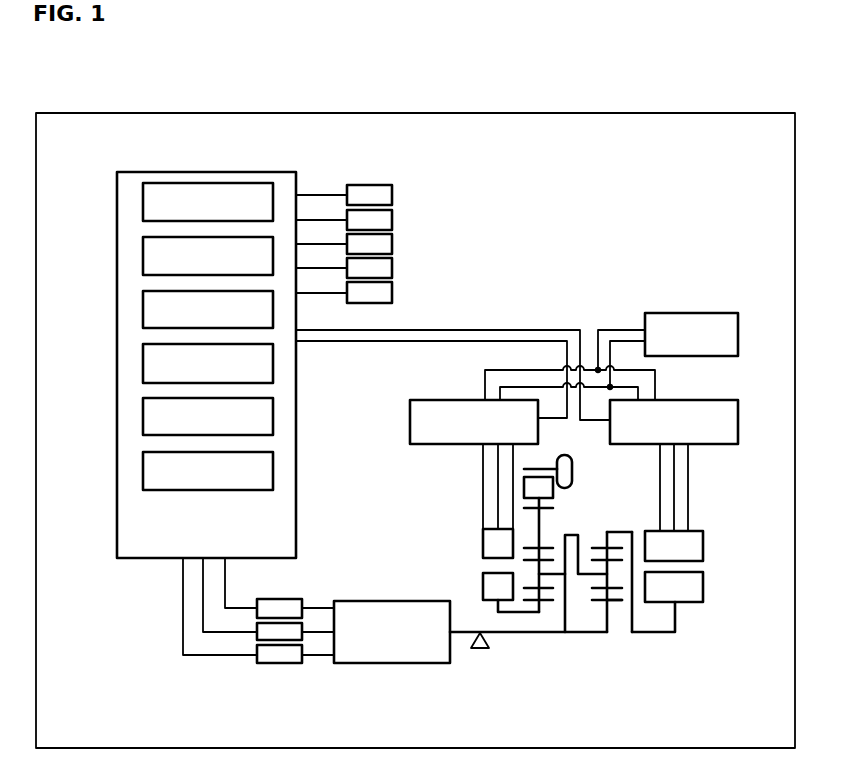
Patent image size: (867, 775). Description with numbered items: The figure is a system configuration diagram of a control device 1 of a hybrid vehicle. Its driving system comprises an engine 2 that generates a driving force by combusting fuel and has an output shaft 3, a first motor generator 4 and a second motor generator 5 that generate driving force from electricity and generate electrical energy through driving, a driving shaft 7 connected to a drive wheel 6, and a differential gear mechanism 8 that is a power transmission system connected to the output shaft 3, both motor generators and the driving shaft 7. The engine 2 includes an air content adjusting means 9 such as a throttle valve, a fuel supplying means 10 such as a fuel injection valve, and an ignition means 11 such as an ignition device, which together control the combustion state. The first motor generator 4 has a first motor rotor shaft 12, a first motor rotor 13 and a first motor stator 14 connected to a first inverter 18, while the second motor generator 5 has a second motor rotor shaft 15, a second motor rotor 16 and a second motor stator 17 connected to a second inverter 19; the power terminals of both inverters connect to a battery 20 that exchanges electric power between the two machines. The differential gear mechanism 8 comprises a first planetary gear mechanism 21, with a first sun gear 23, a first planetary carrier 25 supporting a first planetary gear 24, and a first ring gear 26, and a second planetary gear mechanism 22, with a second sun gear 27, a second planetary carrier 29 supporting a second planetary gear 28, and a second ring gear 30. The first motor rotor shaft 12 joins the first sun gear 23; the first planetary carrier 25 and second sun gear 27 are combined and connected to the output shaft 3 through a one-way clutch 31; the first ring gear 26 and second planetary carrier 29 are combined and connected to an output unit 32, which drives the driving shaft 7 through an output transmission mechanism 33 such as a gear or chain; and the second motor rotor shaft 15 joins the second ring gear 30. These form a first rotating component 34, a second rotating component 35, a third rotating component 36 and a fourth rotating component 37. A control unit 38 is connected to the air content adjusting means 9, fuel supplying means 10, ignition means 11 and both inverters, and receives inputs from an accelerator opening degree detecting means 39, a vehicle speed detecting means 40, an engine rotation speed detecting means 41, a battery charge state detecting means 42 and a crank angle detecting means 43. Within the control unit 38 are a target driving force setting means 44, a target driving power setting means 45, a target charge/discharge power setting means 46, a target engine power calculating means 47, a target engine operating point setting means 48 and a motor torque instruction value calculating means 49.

The control device of a hybrid vehicle 1 is at (658, 111).
The engine 2 is at (398, 663).
The output shaft 3 is at (463, 633).
The first motor generator 4 is at (480, 531).
The second motor generator 5 is at (707, 530).
The drive wheel 6 is at (572, 470).
The driving shaft 7 is at (561, 456).
The differential gear mechanism 8 is at (630, 641).
The air content adjusting means 9 is at (280, 599).
The fuel supplying means 10 is at (259, 634).
The ignition means 11 is at (280, 663).
The first motor rotor shaft 12 is at (515, 633).
The first motor rotor 13 is at (483, 586).
The first motor stator 14 is at (483, 547).
The second motor rotor shaft 15 is at (646, 633).
The second motor rotor 16 is at (703, 591).
The second motor stator 17 is at (703, 549).
The first inverter 18 is at (451, 400).
The second inverter 19 is at (690, 400).
The battery 20 is at (690, 313).
The first planetary gear mechanism 21 is at (538, 618).
The second planetary gear mechanism 22 is at (613, 613).
The first sun gear 23 is at (498, 608).
The first planetary gear 24 is at (532, 572).
The first planetary carrier 25 is at (558, 573).
The first ring gear 26 is at (530, 548).
The second sun gear 27 is at (618, 600).
The second planetary gear 28 is at (615, 598).
The second planetary carrier 29 is at (581, 572).
The second ring gear 30 is at (612, 531).
The one-way clutch 31 is at (480, 651).
The output unit 32 is at (535, 508).
The output transmission mechanism 33 is at (524, 487).
The first rotating component 34 is at (547, 607).
The second rotating component 35 is at (567, 637).
The third rotating component 36 is at (583, 591).
The fourth rotating component 37 is at (620, 531).
The control unit 38 is at (133, 559).
The accelerator opening degree detecting means 39 is at (392, 192).
The vehicle speed detecting means 40 is at (392, 218).
The engine rotation speed detecting means 41 is at (392, 243).
The battery charge state detecting means 42 is at (392, 268).
The crank angle detecting means 43 is at (392, 294).
The target driving force setting means 44 is at (143, 203).
The target driving power setting means 45 is at (143, 256).
The target charge/discharge power setting means 46 is at (143, 310).
The target engine power calculating means 47 is at (143, 363).
The target engine operating point setting means 48 is at (143, 417).
The motor torque instruction value calculating means 49 is at (143, 471).